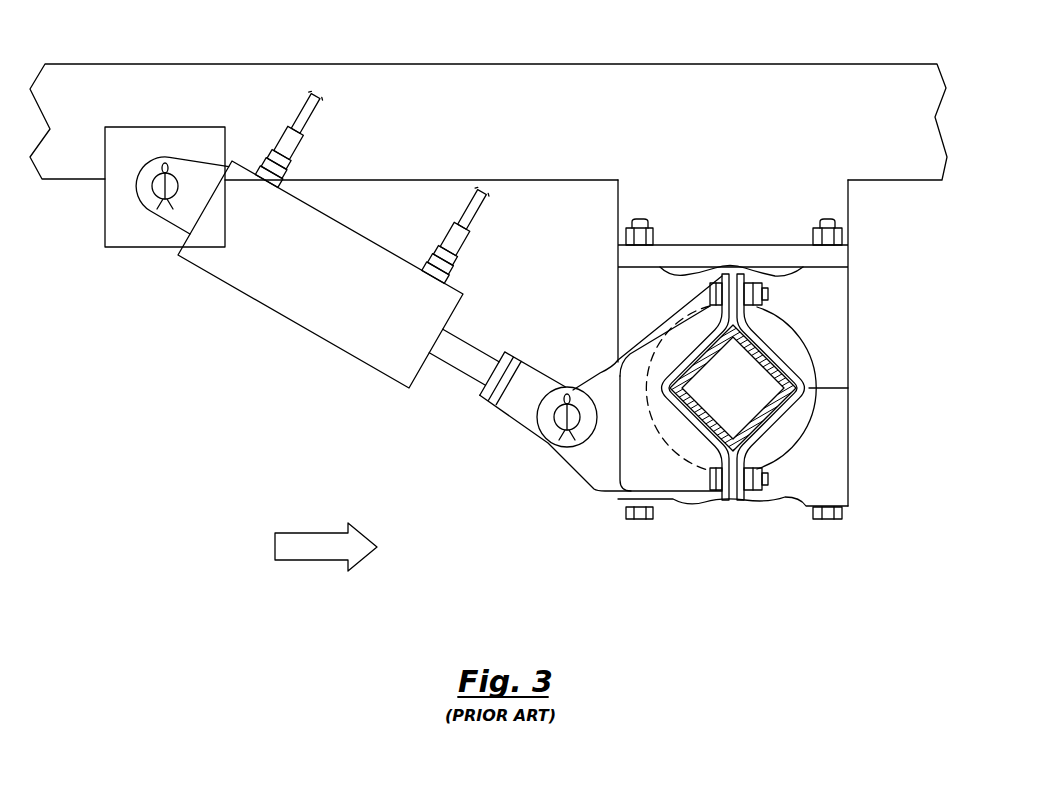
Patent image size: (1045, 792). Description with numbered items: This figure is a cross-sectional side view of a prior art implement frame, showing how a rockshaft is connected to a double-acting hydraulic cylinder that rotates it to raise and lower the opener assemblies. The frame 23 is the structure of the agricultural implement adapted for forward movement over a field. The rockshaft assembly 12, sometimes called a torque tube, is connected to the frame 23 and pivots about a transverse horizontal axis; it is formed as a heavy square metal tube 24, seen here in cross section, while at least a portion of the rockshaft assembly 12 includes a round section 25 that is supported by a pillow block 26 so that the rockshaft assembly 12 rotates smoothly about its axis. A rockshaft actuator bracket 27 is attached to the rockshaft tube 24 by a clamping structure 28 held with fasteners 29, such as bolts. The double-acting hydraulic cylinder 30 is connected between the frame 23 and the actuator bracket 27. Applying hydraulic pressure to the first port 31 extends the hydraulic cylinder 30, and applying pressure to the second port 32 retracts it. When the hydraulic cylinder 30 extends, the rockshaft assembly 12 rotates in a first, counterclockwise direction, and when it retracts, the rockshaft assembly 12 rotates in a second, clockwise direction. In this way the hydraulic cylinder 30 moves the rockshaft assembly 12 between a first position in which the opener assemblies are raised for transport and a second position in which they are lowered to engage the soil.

The rockshaft assembly 12 is at (793, 362).
The frame 23 is at (504, 76).
The square metal tube 24 is at (785, 402).
The round section 25 is at (793, 435).
The pillow block 26 is at (817, 482).
The rockshaft actuator bracket 27 is at (592, 465).
The clamping structure 28 is at (768, 340).
The fasteners 29 is at (763, 287).
The double-acting hydraulic cylinder 30 is at (290, 308).
The first port 31 is at (254, 166).
The second port 32 is at (418, 262).